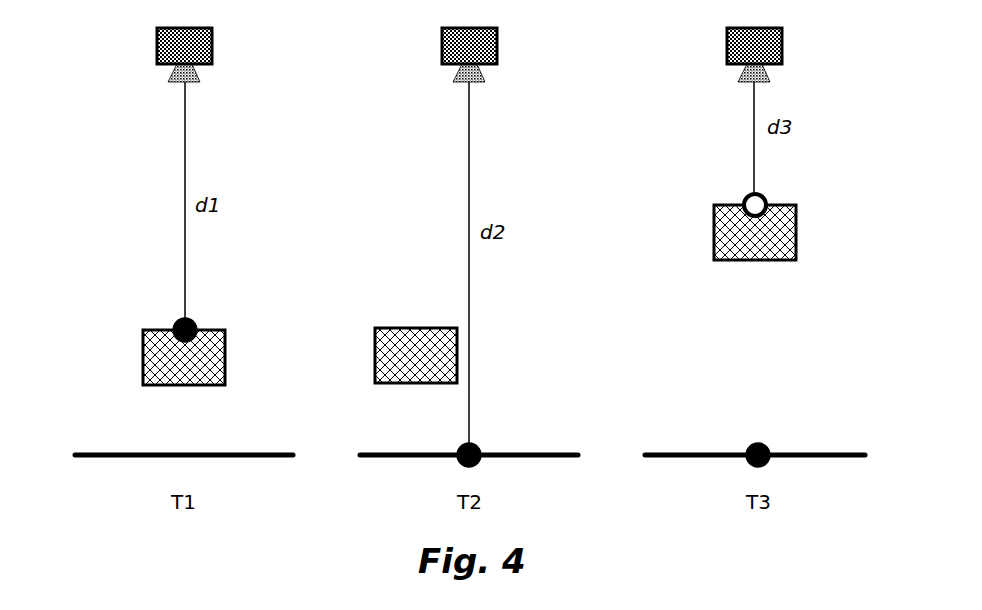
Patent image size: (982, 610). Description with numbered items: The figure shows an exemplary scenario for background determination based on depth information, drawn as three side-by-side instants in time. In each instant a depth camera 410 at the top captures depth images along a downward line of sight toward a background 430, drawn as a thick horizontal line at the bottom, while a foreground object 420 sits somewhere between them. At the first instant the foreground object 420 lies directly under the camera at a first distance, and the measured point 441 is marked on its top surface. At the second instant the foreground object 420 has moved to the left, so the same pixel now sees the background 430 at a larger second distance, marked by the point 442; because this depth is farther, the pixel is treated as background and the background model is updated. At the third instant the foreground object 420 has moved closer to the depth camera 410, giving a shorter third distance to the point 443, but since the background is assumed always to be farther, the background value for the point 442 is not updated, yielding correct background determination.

The depth camera 410 is at (212, 46).
The foreground object 420 is at (143, 357).
The background 430 is at (135, 456).
The contact point on object at T1 441 is at (197, 322).
The contact point on reference surface 442 is at (480, 444).
The open contact point on object at T3 443 is at (765, 195).